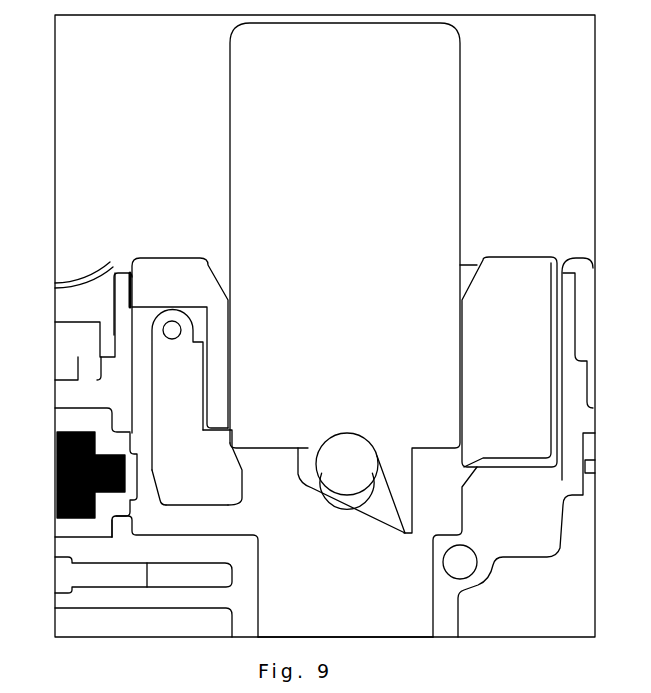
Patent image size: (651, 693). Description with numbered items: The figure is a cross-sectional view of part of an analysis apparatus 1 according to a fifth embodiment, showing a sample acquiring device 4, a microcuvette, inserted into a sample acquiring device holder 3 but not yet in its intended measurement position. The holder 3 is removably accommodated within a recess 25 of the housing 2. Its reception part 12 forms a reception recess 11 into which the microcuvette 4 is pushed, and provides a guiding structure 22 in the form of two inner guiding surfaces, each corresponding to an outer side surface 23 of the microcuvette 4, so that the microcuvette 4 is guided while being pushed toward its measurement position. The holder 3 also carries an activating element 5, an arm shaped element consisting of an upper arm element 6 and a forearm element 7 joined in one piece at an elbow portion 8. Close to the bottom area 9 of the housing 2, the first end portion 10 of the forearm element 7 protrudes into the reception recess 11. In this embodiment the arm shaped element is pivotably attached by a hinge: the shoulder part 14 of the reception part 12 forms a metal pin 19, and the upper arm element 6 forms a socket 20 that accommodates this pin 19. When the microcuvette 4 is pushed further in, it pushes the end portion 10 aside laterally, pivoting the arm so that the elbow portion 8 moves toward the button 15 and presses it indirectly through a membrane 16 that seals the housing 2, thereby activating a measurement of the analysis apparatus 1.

The analysis apparatus 1 is at (166, 152).
The housing 2 is at (537, 540).
The sample acquiring device holder 3 is at (508, 326).
The sample acquiring device 4 is at (432, 119).
The activating element 5 is at (140, 382).
The upper arm element 6 is at (182, 392).
The forearm element 7 is at (220, 500).
The elbow portion 8 is at (168, 472).
The bottom area 9 is at (413, 595).
The first end portion 10 is at (256, 514).
The reception recess 11 is at (280, 472).
The reception part 12 is at (512, 292).
The shoulder part 14 is at (169, 292).
The button 15 is at (76, 475).
The membrane 16 is at (78, 548).
The metal pin 19 is at (166, 323).
The socket 20 is at (176, 347).
The guiding structure 22 is at (240, 355).
The outer side surface 23 is at (230, 115).
The recess 25 is at (148, 365).